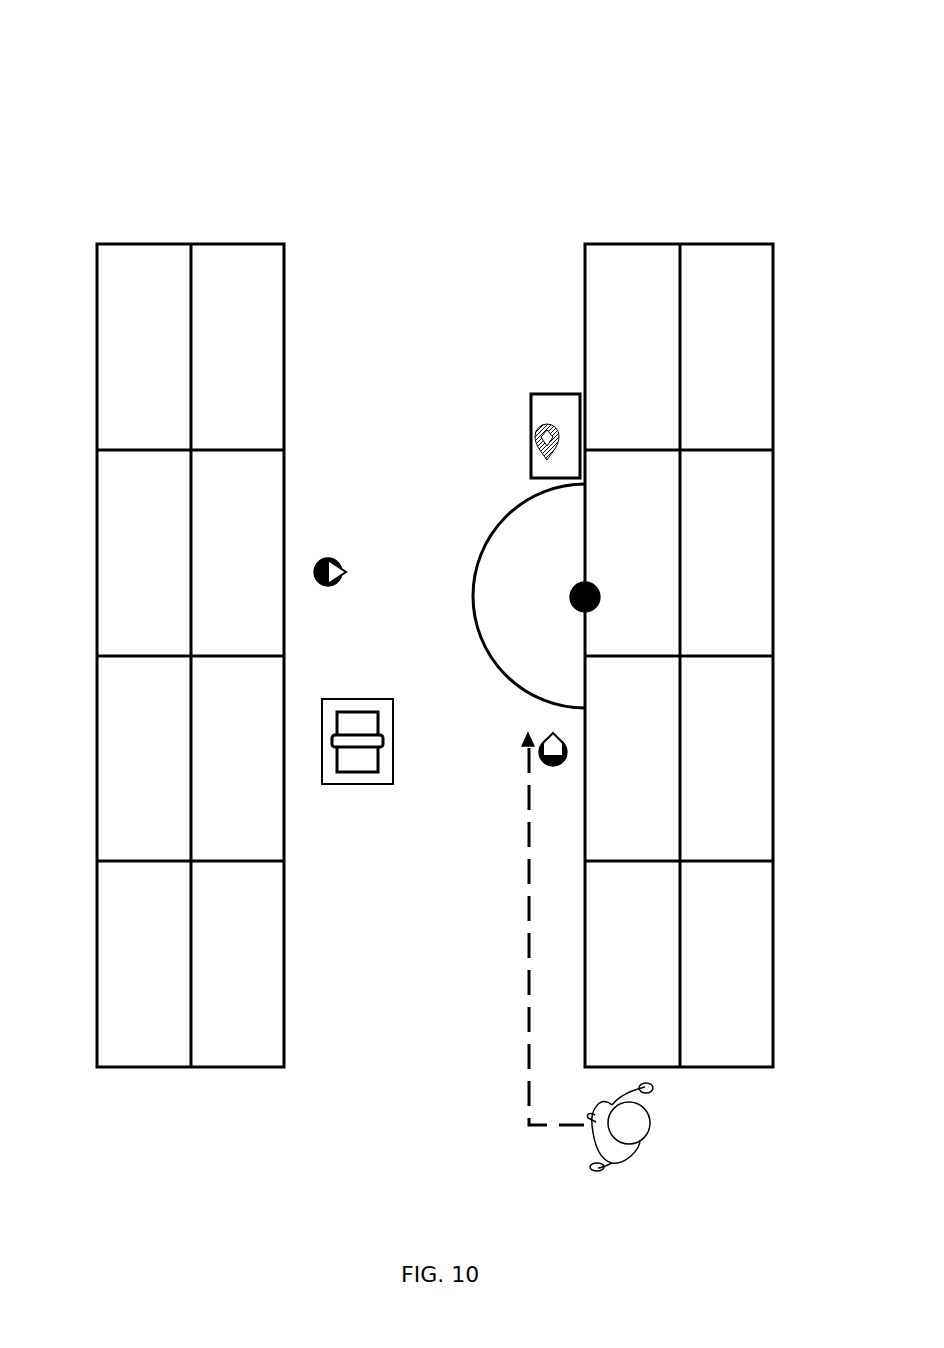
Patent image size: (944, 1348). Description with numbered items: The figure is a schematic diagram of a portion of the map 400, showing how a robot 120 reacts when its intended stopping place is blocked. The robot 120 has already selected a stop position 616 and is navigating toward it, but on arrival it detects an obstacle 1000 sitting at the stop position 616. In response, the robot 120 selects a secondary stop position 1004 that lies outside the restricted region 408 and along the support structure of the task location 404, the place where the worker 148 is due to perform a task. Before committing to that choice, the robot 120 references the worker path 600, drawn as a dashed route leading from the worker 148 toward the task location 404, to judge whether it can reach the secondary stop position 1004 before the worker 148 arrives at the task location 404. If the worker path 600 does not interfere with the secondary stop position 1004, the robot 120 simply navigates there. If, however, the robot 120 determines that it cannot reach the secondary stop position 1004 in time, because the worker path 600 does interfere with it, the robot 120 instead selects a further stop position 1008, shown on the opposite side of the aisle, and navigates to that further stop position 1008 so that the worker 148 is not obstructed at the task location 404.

The map 400 is at (582, 109).
The sensor field of view region 408 is at (462, 537).
The task location 404 is at (598, 587).
The obstacle 1000 is at (531, 413).
The stop position 616 is at (545, 427).
The further stop position 1008 is at (326, 588).
The robot 120 is at (354, 796).
The secondary stop position 1004 is at (545, 762).
The worker path 600 is at (527, 1083).
The worker 148 is at (613, 1172).